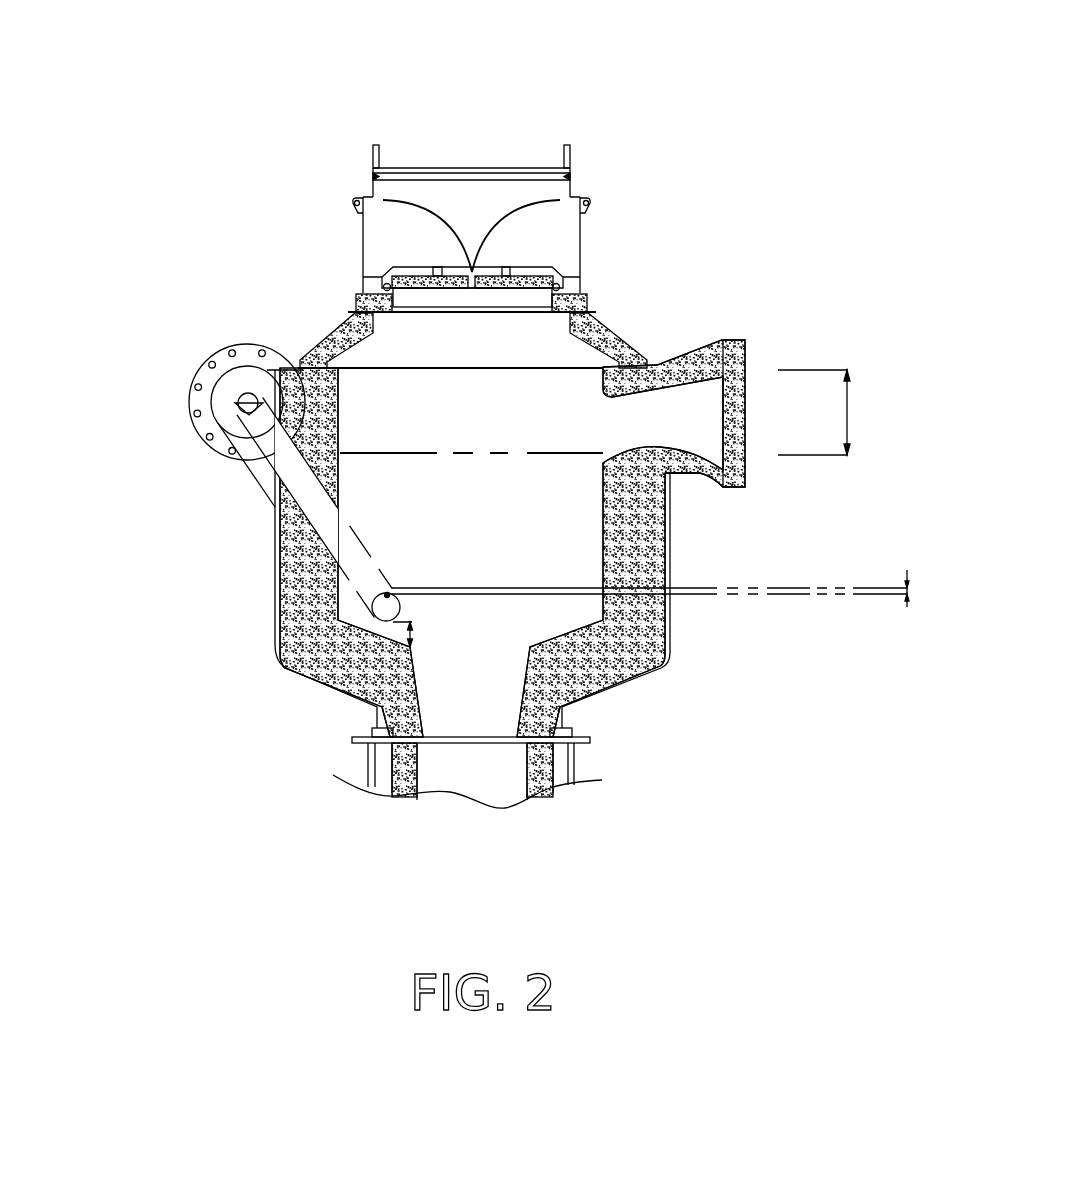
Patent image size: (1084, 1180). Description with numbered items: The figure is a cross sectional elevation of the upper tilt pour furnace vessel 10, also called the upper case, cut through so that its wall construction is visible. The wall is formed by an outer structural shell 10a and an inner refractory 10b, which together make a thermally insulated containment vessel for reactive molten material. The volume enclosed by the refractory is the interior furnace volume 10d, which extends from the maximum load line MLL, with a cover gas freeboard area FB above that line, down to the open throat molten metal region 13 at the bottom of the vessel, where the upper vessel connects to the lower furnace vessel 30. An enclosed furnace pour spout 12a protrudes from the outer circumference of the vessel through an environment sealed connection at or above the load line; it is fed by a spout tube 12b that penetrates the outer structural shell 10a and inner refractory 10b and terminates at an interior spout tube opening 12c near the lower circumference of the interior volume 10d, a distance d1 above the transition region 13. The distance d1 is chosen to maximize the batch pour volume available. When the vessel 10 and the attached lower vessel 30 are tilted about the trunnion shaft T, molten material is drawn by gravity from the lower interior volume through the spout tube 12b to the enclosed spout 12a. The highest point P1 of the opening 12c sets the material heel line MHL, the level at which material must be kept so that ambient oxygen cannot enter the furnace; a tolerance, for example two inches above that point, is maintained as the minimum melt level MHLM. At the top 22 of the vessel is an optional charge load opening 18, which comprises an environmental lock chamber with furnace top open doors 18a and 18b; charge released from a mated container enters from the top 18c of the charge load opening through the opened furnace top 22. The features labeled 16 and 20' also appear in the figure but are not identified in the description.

The upper tilt pour furnace vessel 10 is at (712, 284).
The outer structural shell 10a is at (667, 660).
The inner refractory 10b is at (617, 687).
The interior furnace volume 10d is at (460, 516).
The enclosed furnace pour spout 12a is at (240, 408).
The spout tube 12b is at (313, 490).
The interior spout tube opening 12c is at (392, 598).
The open throat molten metal region 13 is at (482, 703).
The overflow spout 16 is at (744, 364).
The charge load opening 18 is at (610, 146).
The furnace top open door 18a is at (362, 243).
The furnace top open door 18b is at (580, 245).
The top of the charge load opening 18c is at (563, 110).
The inlet flange 20' is at (220, 400).
The furnace top 22 is at (463, 281).
The lower furnace vessel 30 is at (480, 781).
The trunnion shaft axis T is at (248, 415).
The freeboard area FB is at (820, 412).
The maximum load line MLL is at (483, 455).
The material heel line MHL is at (778, 600).
The minimum melt level MHLM is at (915, 588).
The highest point of spout tube opening P1 is at (387, 594).
The distance of spout tube opening above transition volume d1 is at (412, 629).